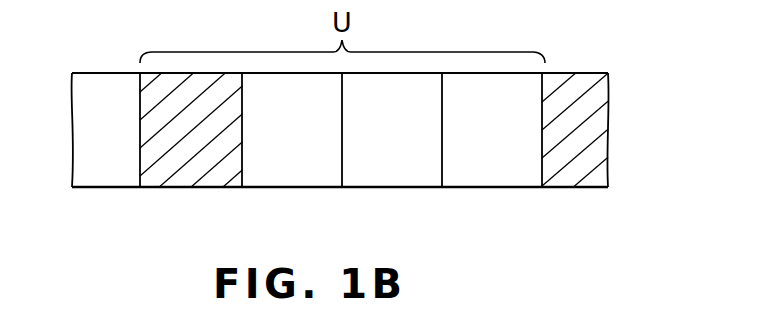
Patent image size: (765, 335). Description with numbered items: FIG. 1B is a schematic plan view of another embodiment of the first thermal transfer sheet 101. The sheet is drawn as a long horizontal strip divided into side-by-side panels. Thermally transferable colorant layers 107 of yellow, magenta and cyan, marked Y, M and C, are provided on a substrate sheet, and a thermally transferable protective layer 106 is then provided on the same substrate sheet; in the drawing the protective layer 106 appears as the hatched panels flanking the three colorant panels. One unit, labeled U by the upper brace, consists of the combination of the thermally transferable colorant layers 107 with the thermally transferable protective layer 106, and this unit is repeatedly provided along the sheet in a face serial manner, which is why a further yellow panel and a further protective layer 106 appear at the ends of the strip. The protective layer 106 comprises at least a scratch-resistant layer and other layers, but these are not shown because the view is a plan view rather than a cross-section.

The first thermal transfer sheet 101 is at (590, 73).
The thermally transferable protective layer 106 is at (185, 177).
The thermally transferable colorant layers 107 is at (242, 197).